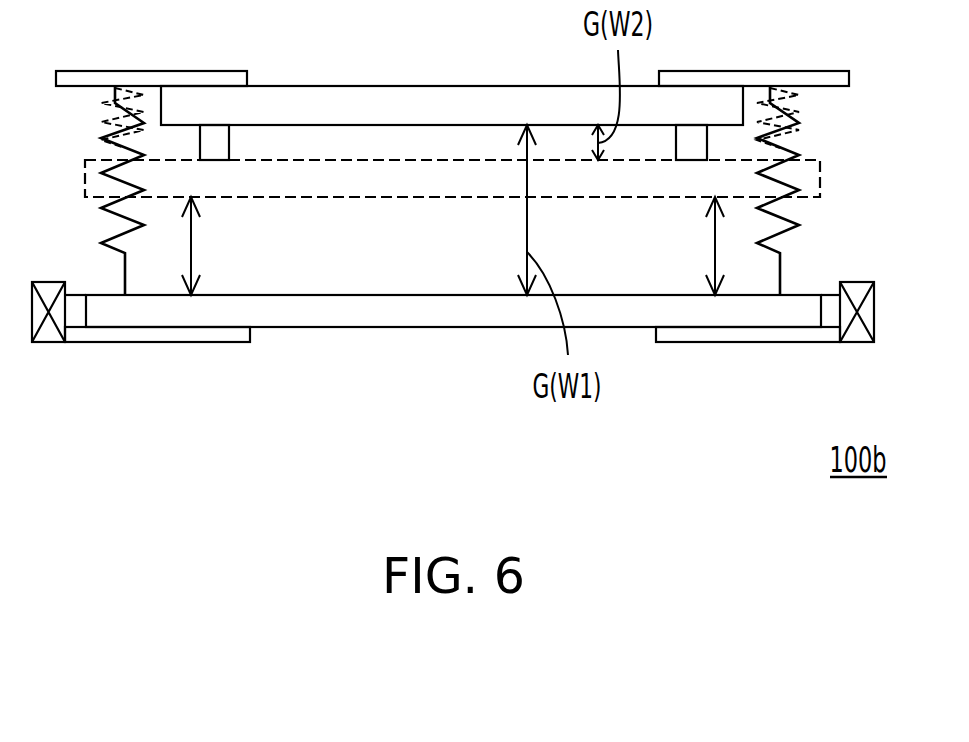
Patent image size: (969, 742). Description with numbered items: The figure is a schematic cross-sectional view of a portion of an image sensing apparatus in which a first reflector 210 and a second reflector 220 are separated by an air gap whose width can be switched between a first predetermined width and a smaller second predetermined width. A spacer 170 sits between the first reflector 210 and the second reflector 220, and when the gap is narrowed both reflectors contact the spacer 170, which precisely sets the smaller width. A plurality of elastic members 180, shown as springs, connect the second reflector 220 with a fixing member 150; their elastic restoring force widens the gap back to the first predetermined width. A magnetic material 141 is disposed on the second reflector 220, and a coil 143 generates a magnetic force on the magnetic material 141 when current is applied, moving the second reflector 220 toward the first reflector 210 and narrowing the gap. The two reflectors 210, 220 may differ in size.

The first reflector 210 is at (467, 100).
The fixing member 150 is at (758, 80).
The spacer 170 is at (214, 135).
The elastic member 180 is at (795, 133).
The second reflector 220 is at (423, 199).
The magnetic material 141 is at (830, 318).
The coil 143 is at (857, 337).